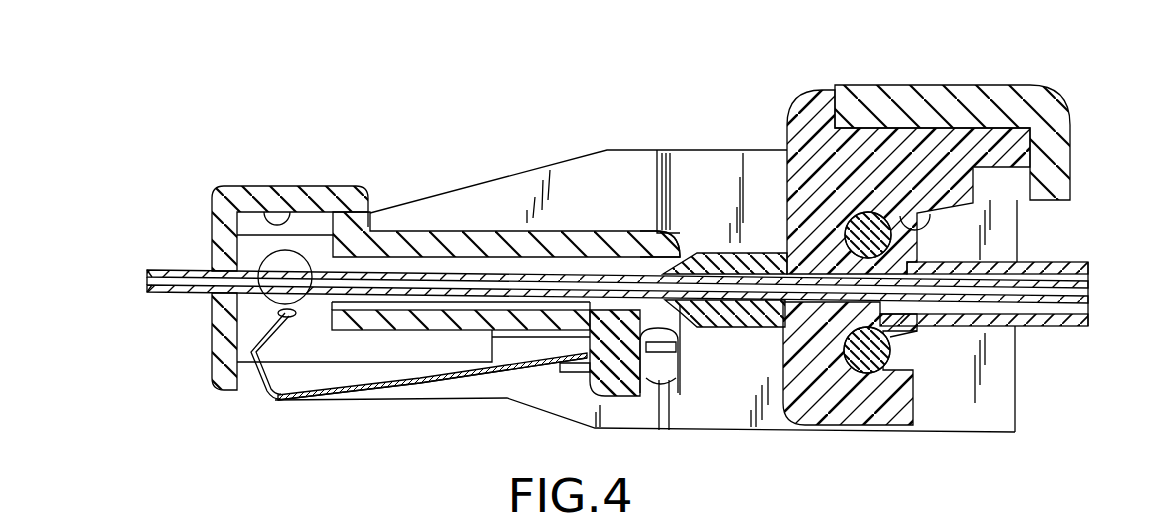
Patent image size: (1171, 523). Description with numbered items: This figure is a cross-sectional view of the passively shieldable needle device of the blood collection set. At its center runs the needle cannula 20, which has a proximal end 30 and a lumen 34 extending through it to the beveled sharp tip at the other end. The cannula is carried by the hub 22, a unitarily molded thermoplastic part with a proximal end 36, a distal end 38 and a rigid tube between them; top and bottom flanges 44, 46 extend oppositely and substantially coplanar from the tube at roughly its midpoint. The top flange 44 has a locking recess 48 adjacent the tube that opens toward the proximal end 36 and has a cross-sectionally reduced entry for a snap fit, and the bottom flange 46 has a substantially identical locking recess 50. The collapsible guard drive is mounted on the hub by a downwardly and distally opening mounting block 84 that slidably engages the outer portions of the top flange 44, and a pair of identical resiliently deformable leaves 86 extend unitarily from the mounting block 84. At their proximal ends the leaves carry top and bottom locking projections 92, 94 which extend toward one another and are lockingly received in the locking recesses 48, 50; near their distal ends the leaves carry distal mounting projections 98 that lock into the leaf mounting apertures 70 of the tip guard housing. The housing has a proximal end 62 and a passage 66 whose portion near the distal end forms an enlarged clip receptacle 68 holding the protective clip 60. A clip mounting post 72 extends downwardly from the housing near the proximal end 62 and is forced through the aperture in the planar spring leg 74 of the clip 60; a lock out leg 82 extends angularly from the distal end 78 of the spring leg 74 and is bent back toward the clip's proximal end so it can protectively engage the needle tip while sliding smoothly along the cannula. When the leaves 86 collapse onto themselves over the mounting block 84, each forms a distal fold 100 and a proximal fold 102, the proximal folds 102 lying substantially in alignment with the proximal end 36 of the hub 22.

The needle cannula 20 is at (156, 258).
The hub 22 is at (1040, 336).
The proximal end 30 is at (1090, 288).
The lumen 34 is at (147, 281).
The proximal end 36 is at (1090, 277).
The distal end 38 is at (697, 327).
The top flange 44 is at (790, 102).
The bottom flange 46 is at (805, 426).
The locking recess 48 is at (922, 227).
The locking recess 50 is at (913, 331).
The protective clip 60 is at (416, 396).
The proximal end 62 is at (681, 250).
The passage 66 is at (398, 258).
The clip receptacle 68 is at (265, 211).
The leaf mounting apertures 70 is at (212, 195).
The clip mounting post 72 is at (655, 380).
The spring leg 74 is at (320, 395).
The distal end 78 is at (272, 403).
The lock out leg 82 is at (245, 378).
The mounting block 84 is at (1063, 95).
The leaves 86 is at (487, 168).
The top locking projection 92 is at (873, 212).
The bottom locking projection 94 is at (889, 358).
The distal mounting projection 98 is at (293, 258).
The distal fold 100 is at (657, 177).
The proximal fold 102 is at (1018, 400).